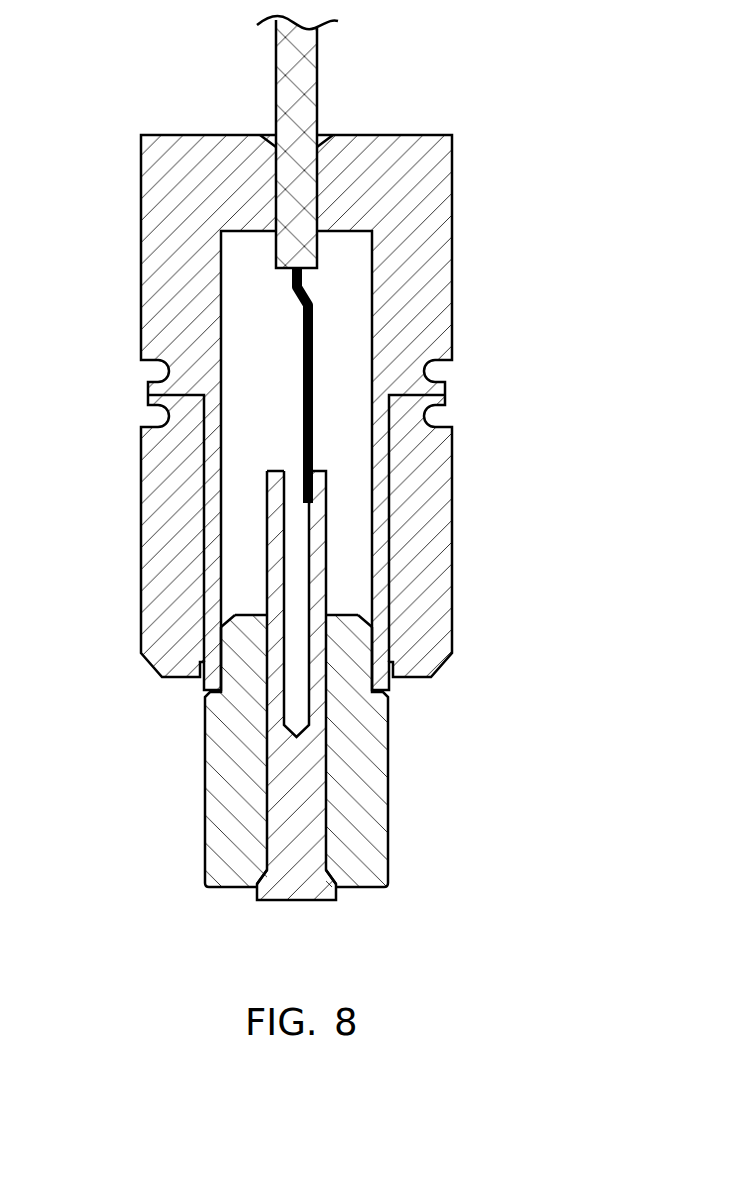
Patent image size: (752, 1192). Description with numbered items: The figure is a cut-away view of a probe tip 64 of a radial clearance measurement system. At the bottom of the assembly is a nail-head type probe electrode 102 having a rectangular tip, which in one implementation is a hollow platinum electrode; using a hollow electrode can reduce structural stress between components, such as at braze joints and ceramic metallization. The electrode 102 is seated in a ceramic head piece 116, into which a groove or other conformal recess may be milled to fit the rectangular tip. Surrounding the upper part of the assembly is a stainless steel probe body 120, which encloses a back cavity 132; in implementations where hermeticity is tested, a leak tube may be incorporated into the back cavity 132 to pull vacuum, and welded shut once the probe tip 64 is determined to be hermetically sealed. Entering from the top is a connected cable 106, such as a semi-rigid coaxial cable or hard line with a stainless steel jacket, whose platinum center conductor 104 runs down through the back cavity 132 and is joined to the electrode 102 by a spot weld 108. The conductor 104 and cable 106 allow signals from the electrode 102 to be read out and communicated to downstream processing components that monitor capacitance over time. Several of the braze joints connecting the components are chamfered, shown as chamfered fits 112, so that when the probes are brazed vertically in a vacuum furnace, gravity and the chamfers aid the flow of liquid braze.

The probe tip 64 is at (112, 873).
The electrode 102 is at (267, 901).
The conductor 104 is at (314, 318).
The cable 106 is at (317, 63).
The spot weld 108 is at (328, 463).
The chamfered fits 112 is at (222, 633).
The ceramic head piece 116 is at (373, 865).
The probe body 120 is at (163, 198).
The back cavity 132 is at (250, 310).